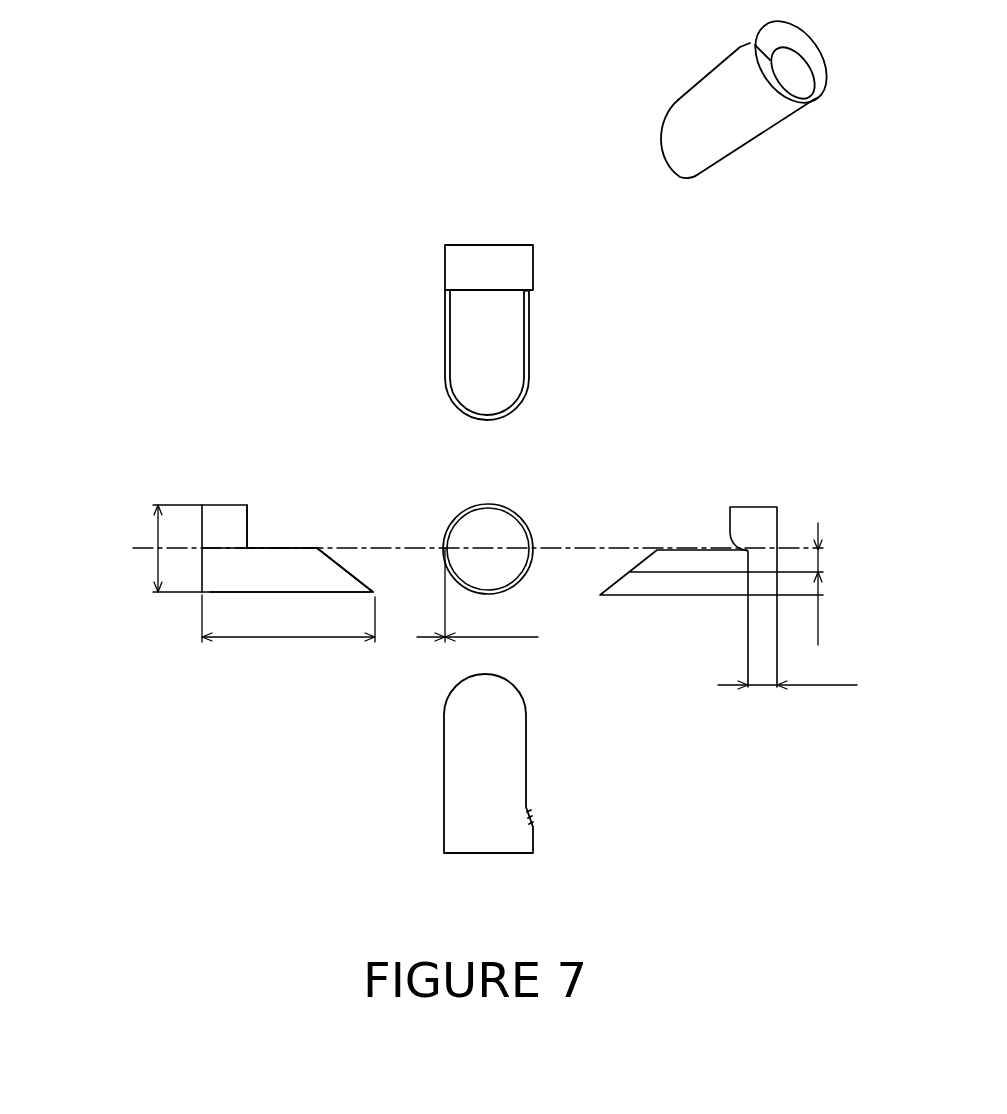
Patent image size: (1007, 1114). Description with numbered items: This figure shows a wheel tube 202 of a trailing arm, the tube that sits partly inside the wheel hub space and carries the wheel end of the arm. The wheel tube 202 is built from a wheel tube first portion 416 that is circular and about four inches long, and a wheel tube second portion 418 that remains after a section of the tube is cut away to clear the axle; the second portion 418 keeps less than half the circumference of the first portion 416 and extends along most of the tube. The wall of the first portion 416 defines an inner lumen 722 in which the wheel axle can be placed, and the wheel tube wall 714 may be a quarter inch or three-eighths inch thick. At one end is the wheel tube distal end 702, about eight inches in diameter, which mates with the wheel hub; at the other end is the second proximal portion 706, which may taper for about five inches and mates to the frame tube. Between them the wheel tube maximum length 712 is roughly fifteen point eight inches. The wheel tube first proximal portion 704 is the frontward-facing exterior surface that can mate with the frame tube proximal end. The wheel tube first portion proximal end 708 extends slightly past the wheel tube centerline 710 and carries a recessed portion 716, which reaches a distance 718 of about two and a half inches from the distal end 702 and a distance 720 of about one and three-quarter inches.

The wheel tube 202 is at (728, 173).
The wheel tube first portion 416 is at (218, 523).
The wheel tube second portion 418 is at (283, 573).
The wheel tube distal end 702 is at (195, 569).
The wheel tube first proximal portion 704 is at (340, 598).
The second proximal portion 706 is at (353, 571).
The wheel tube first portion proximal end 708 is at (254, 525).
The wheel tube centerline 710 is at (140, 548).
The wheel tube maximum length 712 is at (288, 630).
The wheel tube wall 714 is at (477, 608).
The recessed portion 716 is at (743, 560).
The distance 718 is at (787, 611).
The distance 720 is at (841, 584).
The inner lumen 722 is at (497, 532).